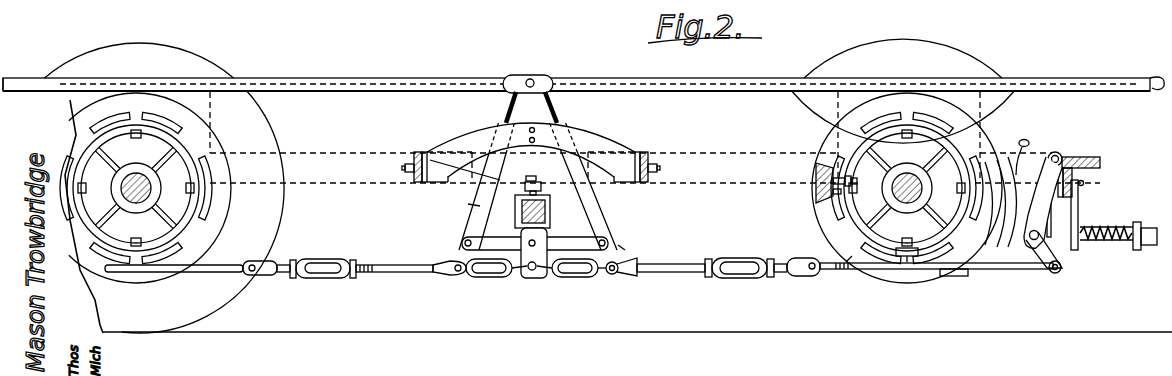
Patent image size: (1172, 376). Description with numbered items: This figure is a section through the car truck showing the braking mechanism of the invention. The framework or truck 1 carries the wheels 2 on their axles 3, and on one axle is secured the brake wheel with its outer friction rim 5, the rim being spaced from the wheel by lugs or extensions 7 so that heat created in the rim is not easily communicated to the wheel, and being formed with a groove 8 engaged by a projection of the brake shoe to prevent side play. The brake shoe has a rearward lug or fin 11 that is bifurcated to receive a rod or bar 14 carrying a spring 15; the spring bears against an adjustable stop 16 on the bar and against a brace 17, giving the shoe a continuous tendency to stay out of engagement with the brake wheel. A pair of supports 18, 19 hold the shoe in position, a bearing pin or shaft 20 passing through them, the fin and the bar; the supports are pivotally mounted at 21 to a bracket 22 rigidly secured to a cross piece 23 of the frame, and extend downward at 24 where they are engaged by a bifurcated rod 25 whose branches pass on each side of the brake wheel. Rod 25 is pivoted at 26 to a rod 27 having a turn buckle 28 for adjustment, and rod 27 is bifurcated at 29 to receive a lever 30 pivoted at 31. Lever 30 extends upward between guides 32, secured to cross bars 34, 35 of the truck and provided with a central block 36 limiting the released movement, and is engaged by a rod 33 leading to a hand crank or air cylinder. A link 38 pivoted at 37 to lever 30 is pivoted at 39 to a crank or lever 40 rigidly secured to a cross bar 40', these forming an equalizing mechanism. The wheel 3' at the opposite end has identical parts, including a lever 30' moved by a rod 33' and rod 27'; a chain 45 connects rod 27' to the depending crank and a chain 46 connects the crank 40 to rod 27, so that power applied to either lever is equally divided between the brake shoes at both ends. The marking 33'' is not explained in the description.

The framework or truck 1 is at (325, 218).
The wheels 2 is at (197, 70).
The axle 3 is at (907, 176).
The wheel 3' is at (251, 241).
The friction rim 5 is at (840, 230).
The lugs or extensions 7 is at (857, 137).
The groove 8 is at (818, 190).
The lug or fin 11 is at (846, 262).
The rod or bar 14 is at (1078, 244).
The spring 15 is at (1137, 213).
The stop 16 is at (1140, 249).
The brace 17 is at (1080, 195).
The support 18 is at (1080, 255).
The support 19 is at (968, 281).
The bearing pin or shaft 20 is at (1032, 242).
The pivot 21 is at (1062, 155).
The support or bracket 22 is at (1073, 162).
The cross piece 23 is at (1100, 171).
The extensions 24 is at (1057, 254).
The bifurcated rod 25 is at (940, 270).
The pivot 26 is at (802, 278).
The rod 27 is at (673, 282).
The rod 27' is at (262, 288).
The turn buckle 28 is at (735, 258).
The bifurcation 29 is at (447, 275).
The lever 30 is at (632, 226).
The lever 30' is at (459, 150).
The pivot 31 is at (618, 276).
The guides 32 is at (487, 130).
The rod 33 is at (583, 70).
The rod 33' is at (266, 71).
The bar end 33'' is at (34, 116).
The cross bar 34 is at (418, 150).
The cross bar 35 is at (647, 152).
The block 36 is at (497, 97).
The pivot 37 is at (590, 210).
The link 38 is at (546, 209).
The pivot 39 is at (515, 235).
The crank or lever 40 is at (455, 196).
The cross bar 40' is at (530, 170).
The chain 45 is at (475, 277).
The chain 46 is at (575, 277).